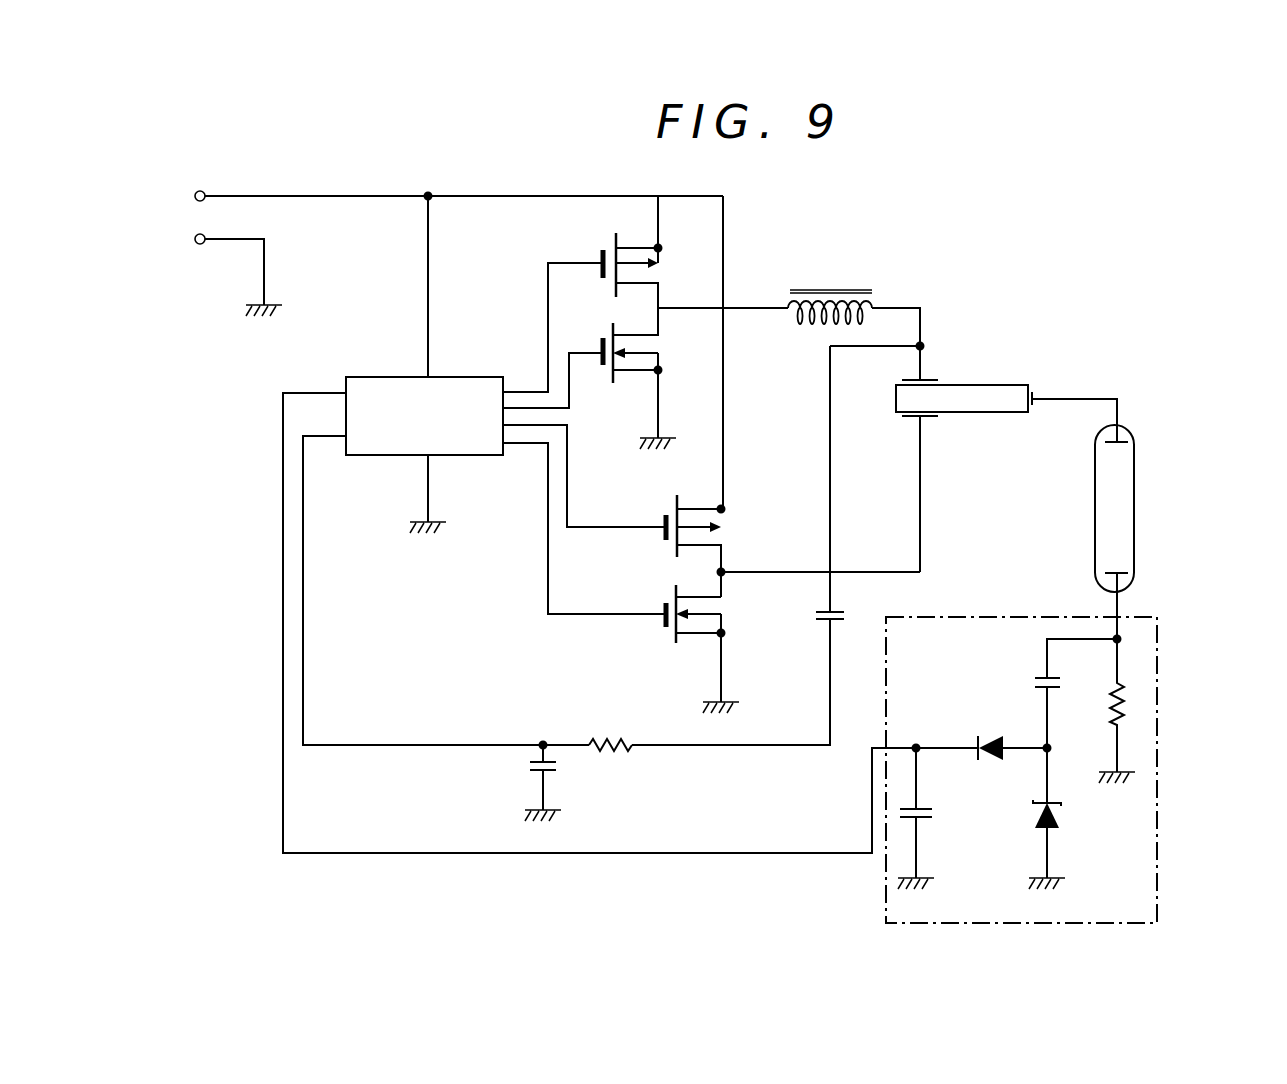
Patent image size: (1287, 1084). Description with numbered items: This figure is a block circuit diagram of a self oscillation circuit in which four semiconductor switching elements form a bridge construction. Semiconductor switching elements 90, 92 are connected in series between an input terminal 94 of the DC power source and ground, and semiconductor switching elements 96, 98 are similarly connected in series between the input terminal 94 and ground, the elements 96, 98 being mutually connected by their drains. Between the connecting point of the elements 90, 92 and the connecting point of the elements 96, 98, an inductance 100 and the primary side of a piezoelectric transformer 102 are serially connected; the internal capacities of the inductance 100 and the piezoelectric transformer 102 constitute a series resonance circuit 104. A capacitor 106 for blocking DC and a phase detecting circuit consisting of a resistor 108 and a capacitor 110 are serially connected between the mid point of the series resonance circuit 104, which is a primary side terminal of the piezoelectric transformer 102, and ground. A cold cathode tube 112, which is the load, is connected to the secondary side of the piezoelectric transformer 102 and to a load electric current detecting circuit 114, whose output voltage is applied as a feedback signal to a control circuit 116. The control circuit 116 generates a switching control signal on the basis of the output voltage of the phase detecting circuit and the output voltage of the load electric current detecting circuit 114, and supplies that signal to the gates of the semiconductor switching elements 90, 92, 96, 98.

The input terminal 94 is at (204, 192).
The control circuit 116 is at (366, 377).
The semiconductor switching element 90 is at (612, 247).
The semiconductor switching element 92 is at (608, 375).
The semiconductor switching element 96 is at (673, 497).
The semiconductor switching element 98 is at (673, 590).
The inductance 100 is at (871, 302).
The piezoelectric transformer 102 is at (1000, 385).
The series resonance circuit 104 is at (923, 345).
The capacitor 106 is at (811, 620).
The resistor 108 is at (598, 742).
The capacitor 110 is at (528, 768).
The cold cathode tube 112 is at (1095, 500).
The load electric current detecting circuit 114 is at (1158, 681).